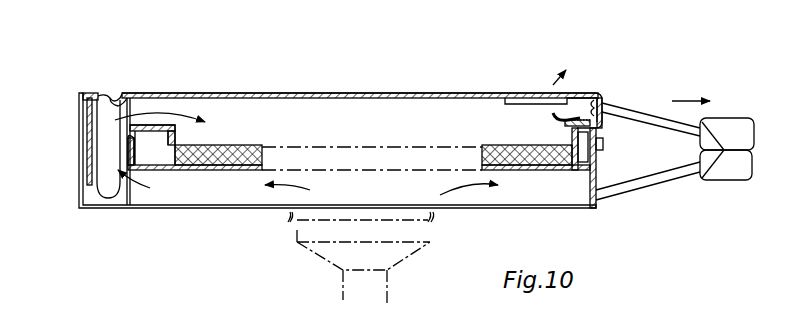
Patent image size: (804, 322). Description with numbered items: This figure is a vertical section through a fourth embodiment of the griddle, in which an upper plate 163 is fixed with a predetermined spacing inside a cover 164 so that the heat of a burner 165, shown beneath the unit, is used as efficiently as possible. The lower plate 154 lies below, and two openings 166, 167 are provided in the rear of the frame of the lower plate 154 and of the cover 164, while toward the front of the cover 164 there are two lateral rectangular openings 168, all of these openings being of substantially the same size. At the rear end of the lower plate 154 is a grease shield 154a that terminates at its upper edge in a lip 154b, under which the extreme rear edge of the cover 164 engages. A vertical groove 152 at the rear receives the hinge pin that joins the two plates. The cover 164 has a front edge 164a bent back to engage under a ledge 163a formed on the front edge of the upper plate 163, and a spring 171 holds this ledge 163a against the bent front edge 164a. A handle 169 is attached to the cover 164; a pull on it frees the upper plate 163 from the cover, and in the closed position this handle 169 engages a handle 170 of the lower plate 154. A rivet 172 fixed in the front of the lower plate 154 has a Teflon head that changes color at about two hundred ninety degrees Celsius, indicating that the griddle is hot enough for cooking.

The vertical groove 152 is at (110, 200).
The lower plate 154 is at (145, 176).
The grease shield 154a is at (90, 158).
The lip 154b is at (100, 96).
The upper plate 163 is at (222, 150).
The ledge 163a is at (572, 128).
The cover 164 is at (342, 94).
The front edge 164a is at (603, 126).
The burner 165 is at (435, 222).
The opening 166 is at (140, 200).
The opening 167 is at (120, 94).
The lateral rectangular opening 168 is at (507, 128).
The handle 169 is at (745, 128).
The handle 170 is at (708, 180).
The spring 171 is at (570, 120).
The rivet 172 is at (605, 150).